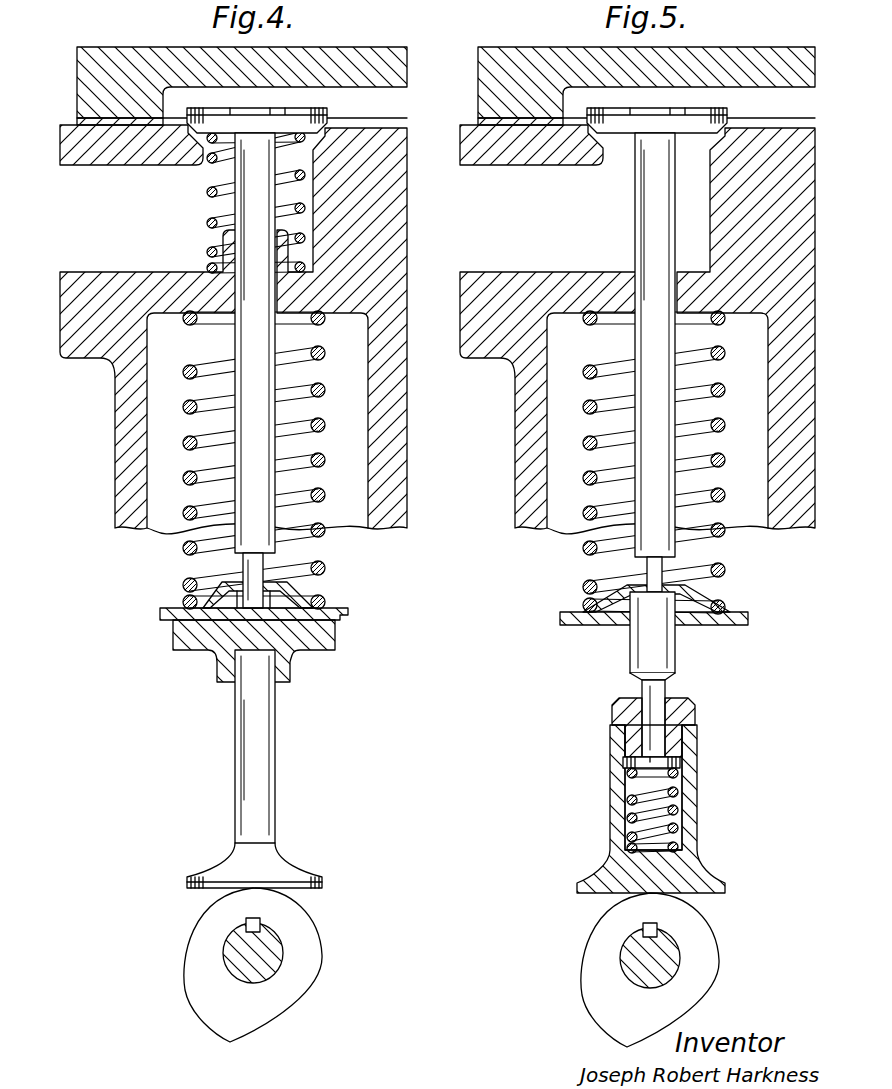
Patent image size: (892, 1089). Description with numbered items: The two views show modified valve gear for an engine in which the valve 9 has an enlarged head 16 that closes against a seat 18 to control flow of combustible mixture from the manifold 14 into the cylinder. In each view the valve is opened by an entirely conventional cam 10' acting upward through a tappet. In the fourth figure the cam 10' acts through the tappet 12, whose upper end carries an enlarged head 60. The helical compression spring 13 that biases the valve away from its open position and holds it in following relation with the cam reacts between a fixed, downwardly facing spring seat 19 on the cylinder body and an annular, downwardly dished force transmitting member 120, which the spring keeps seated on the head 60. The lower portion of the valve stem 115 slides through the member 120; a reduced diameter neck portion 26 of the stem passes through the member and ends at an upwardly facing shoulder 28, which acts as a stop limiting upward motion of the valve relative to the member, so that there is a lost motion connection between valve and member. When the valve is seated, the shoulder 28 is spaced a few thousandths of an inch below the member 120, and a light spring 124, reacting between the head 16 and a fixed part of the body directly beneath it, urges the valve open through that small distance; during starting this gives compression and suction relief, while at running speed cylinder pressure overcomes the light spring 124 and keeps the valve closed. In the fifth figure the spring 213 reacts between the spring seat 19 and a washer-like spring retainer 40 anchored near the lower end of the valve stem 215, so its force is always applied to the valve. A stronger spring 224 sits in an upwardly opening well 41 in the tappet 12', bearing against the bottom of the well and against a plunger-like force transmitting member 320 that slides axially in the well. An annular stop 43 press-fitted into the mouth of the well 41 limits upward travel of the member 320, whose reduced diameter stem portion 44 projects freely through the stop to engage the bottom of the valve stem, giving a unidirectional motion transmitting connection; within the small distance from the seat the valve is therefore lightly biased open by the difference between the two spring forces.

In FIG. 4, the valve 9 is at (257, 172).
In FIG. 5, the valve 9 is at (629, 362).
In FIG. 4, the cam 10' is at (289, 965).
In FIG. 5, the cam 10' is at (685, 970).
In FIG. 4, the tappet 12 is at (256, 769).
In FIG. 5, the tappet 12' is at (639, 809).
In FIG. 4, the spring 13 is at (323, 533).
In FIG. 4, the manifold 14 is at (70, 168).
In FIG. 5, the manifold 14 is at (620, 123).
In FIG. 4, the head 16 is at (253, 117).
In FIG. 5, the head 16 is at (657, 109).
In FIG. 4, the seat 18 is at (315, 145).
In FIG. 5, the seat 18 is at (746, 309).
In FIG. 4, the spring seat 19 is at (177, 318).
In FIG. 5, the spring seat 19 is at (614, 403).
In FIG. 4, the neck portion 26 is at (250, 561).
In FIG. 4, the shoulder 28 is at (262, 572).
In FIG. 5, the spring retainer 40 is at (672, 623).
In FIG. 5, the well 41 is at (621, 787).
In FIG. 5, the annular stop 43 is at (624, 719).
In FIG. 5, the stem portion 44 is at (676, 674).
In FIG. 4, the enlarged head 60 is at (336, 634).
In FIG. 4, the valve stem 115 is at (253, 418).
In FIG. 4, the force transmitting member 120 is at (338, 608).
In FIG. 4, the light spring 124 is at (207, 224).
In FIG. 5, the spring 213 is at (625, 584).
In FIG. 5, the valve stem 215 is at (640, 433).
In FIG. 5, the spring 224 is at (689, 810).
In FIG. 5, the force transmitting member 320 is at (691, 763).